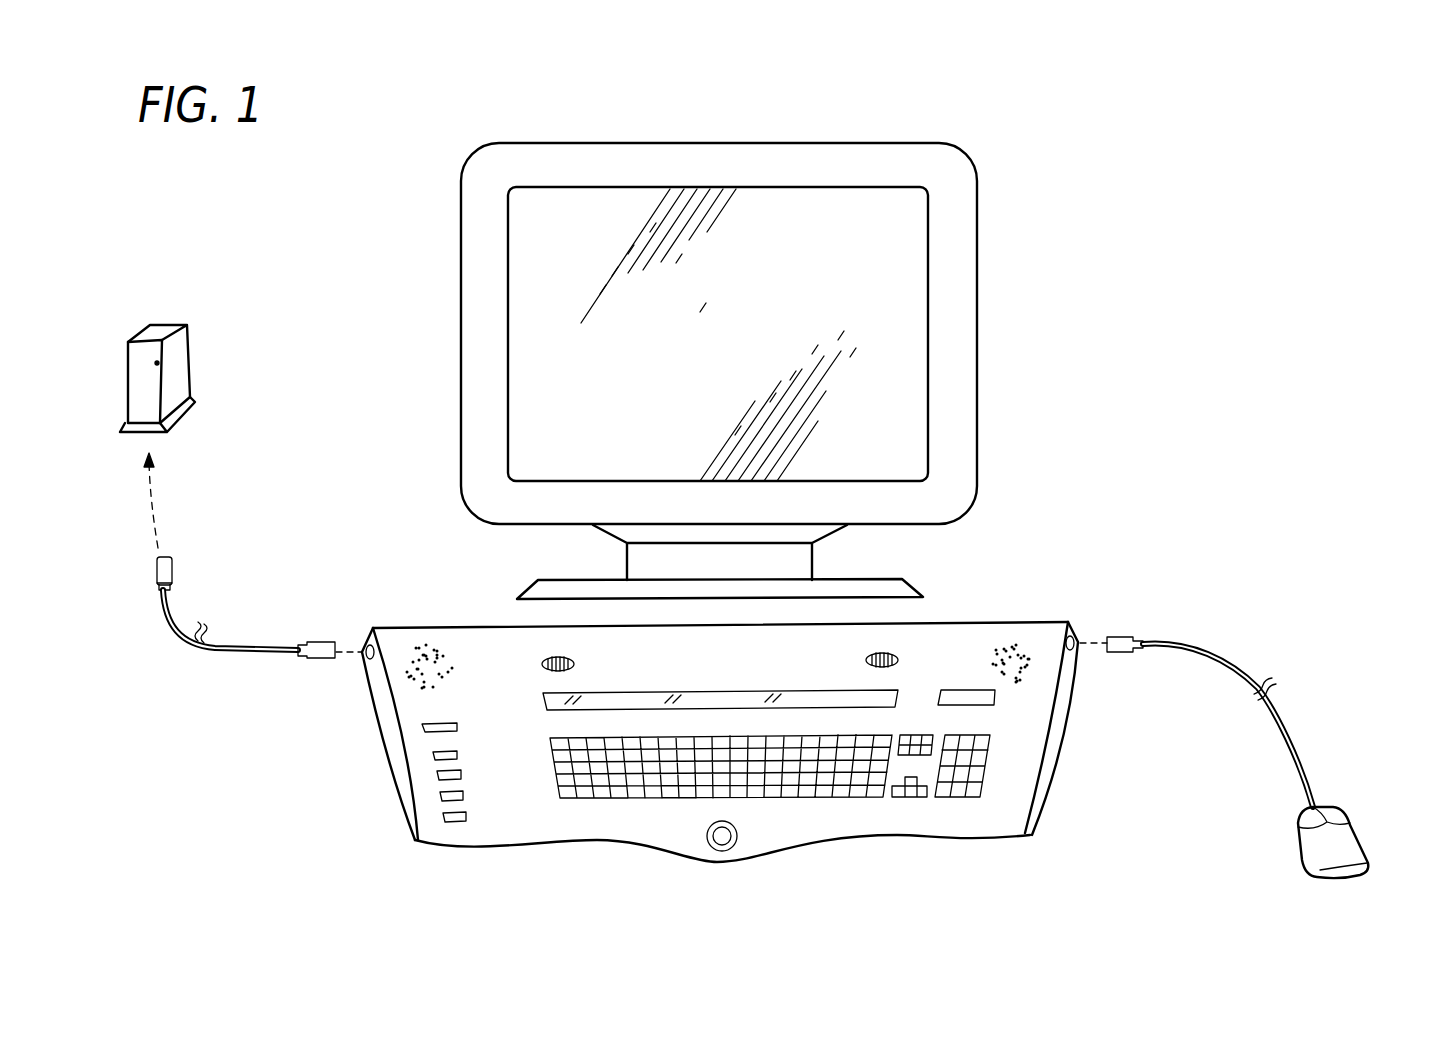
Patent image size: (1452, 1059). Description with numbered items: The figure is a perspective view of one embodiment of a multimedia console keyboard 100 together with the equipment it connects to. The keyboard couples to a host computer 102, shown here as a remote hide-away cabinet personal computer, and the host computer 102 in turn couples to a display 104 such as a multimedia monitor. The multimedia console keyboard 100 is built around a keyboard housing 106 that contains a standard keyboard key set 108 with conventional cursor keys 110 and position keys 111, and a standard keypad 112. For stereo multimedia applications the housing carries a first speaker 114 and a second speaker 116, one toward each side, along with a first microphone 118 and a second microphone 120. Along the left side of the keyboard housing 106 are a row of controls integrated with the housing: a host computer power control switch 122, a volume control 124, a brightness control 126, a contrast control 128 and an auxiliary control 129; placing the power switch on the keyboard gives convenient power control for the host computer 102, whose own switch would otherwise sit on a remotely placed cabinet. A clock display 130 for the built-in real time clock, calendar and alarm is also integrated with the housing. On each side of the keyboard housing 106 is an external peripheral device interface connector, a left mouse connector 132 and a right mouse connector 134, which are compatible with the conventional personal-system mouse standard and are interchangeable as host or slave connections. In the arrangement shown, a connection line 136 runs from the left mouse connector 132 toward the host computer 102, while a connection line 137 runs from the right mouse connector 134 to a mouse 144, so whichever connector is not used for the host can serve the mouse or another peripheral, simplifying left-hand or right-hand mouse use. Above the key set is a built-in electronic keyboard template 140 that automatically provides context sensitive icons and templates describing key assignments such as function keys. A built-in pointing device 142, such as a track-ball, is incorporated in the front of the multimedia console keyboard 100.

The multimedia console keyboard 100 is at (1102, 547).
The host computer 102 is at (148, 332).
The display 104 is at (962, 253).
The keyboard housing 106 is at (1037, 620).
The standard keyboard key set 108 is at (583, 792).
The cursor keys 110 is at (910, 797).
The position keys 111 is at (930, 734).
The standard keypad 112 is at (965, 775).
The first speaker 114 is at (442, 660).
The second speaker 116 is at (1000, 650).
The first microphone 118 is at (568, 658).
The second microphone 120 is at (873, 653).
The host computer power control switch 122 is at (422, 724).
The volume control 124 is at (433, 753).
The brightness control 126 is at (437, 773).
The contrast control 128 is at (440, 794).
The auxiliary control 129 is at (443, 815).
The clock display 130 is at (982, 690).
The left mouse connector 132 is at (368, 648).
The right mouse connector 134 is at (1077, 650).
The PS/2 connection line 136 is at (277, 645).
The PS/2 connection line 137 is at (1238, 658).
The electronic keyboard template 140 is at (725, 693).
The pointing device 142 is at (735, 840).
The mouse 144 is at (1353, 842).